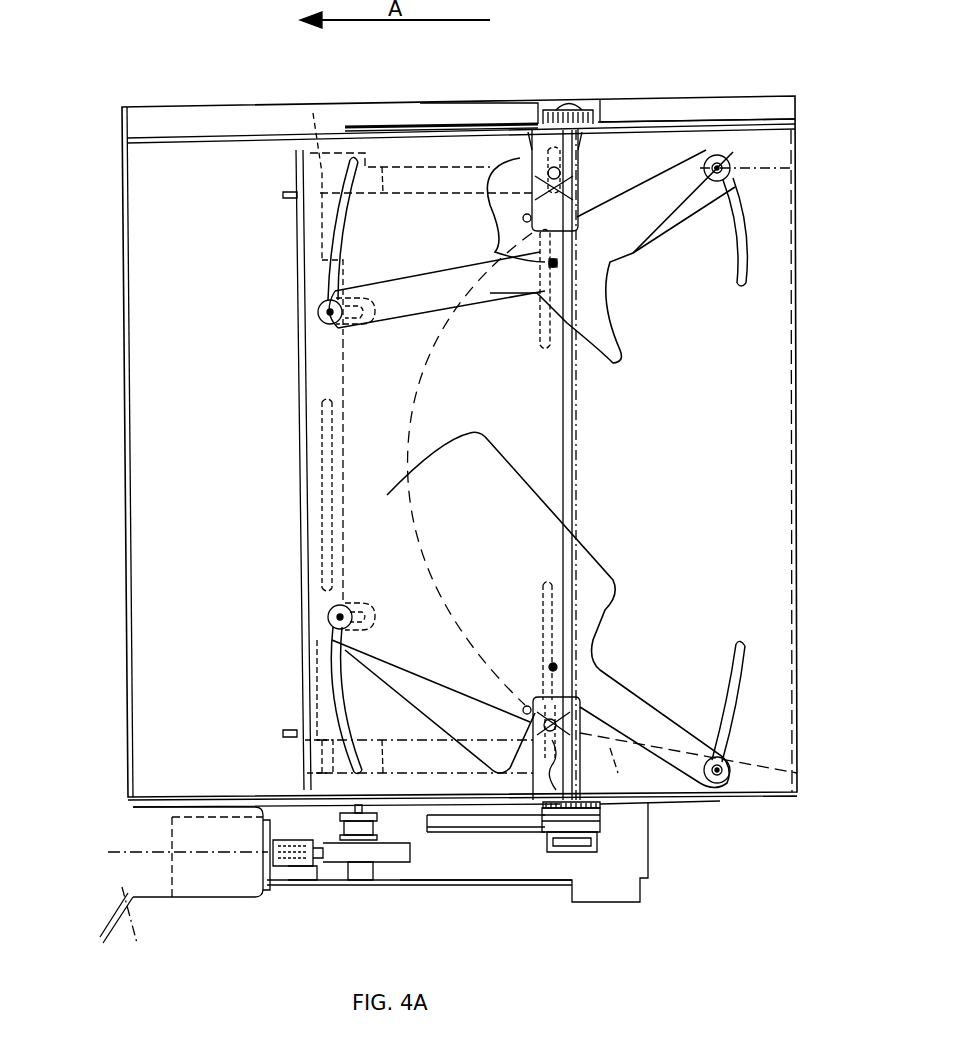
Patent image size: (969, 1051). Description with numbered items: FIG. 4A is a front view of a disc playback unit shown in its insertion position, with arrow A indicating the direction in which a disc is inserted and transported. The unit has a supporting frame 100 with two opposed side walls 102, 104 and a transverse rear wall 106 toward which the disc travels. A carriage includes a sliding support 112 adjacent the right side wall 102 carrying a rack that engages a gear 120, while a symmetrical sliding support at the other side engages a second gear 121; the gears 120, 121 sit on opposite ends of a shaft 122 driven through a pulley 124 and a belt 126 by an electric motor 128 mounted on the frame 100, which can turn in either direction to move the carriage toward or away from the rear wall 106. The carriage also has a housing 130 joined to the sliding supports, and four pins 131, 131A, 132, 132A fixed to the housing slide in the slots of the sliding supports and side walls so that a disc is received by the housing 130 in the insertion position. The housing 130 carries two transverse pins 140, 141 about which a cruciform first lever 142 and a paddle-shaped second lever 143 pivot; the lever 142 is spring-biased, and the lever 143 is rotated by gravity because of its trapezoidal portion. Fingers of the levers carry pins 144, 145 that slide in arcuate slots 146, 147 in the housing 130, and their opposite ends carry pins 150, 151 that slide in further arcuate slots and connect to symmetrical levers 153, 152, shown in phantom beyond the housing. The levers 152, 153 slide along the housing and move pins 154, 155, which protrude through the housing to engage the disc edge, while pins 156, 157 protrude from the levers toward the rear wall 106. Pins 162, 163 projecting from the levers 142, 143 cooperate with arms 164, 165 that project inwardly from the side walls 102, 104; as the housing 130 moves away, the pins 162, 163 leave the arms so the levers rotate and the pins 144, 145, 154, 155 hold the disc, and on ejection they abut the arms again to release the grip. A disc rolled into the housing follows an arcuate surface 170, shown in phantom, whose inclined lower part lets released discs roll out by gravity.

The supporting frame 100 is at (618, 908).
The side wall 102 is at (268, 136).
The side wall 104 is at (128, 803).
The rear wall 106 is at (127, 727).
The sliding support 112 is at (428, 127).
The gear 120 is at (568, 109).
The second gear 121 is at (548, 822).
The shaft 122 is at (565, 395).
The pulley 124 is at (348, 862).
The belt 126 is at (447, 834).
The electric motor 128 is at (153, 868).
The housing 130 is at (768, 277).
The pin 131 is at (364, 126).
The pin 131A is at (384, 862).
The pin 132 is at (690, 99).
The pin 132A is at (688, 806).
The transverse pin 140 is at (548, 264).
The transverse pin 141 is at (549, 666).
The first lever 142 is at (515, 260).
The second lever 143 is at (447, 688).
The pin 144 is at (728, 165).
The pin 145 is at (728, 775).
The arcuate slot 146 is at (741, 288).
The arcuate slot 147 is at (750, 648).
The pin 150 is at (326, 314).
The pin 151 is at (338, 616).
The lever 152 is at (316, 202).
The lever 153 is at (322, 768).
The pin 154 is at (536, 186).
The pin 155 is at (556, 808).
The pin 156 is at (285, 194).
The pin 157 is at (286, 735).
The pin 162 is at (522, 218).
The pin 163 is at (522, 711).
The arm 164 is at (605, 121).
The arm 165 is at (583, 848).
The arcuate surface 170 is at (612, 750).